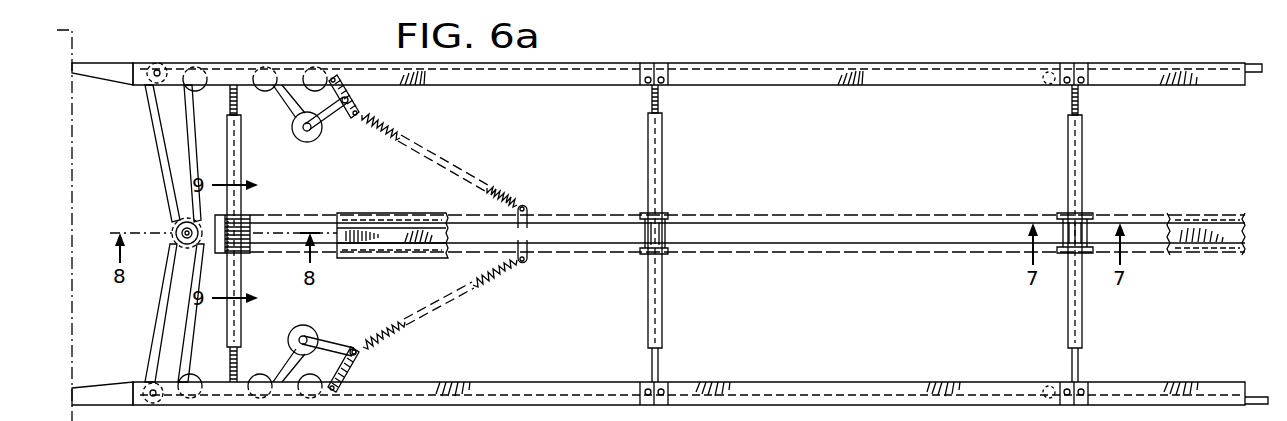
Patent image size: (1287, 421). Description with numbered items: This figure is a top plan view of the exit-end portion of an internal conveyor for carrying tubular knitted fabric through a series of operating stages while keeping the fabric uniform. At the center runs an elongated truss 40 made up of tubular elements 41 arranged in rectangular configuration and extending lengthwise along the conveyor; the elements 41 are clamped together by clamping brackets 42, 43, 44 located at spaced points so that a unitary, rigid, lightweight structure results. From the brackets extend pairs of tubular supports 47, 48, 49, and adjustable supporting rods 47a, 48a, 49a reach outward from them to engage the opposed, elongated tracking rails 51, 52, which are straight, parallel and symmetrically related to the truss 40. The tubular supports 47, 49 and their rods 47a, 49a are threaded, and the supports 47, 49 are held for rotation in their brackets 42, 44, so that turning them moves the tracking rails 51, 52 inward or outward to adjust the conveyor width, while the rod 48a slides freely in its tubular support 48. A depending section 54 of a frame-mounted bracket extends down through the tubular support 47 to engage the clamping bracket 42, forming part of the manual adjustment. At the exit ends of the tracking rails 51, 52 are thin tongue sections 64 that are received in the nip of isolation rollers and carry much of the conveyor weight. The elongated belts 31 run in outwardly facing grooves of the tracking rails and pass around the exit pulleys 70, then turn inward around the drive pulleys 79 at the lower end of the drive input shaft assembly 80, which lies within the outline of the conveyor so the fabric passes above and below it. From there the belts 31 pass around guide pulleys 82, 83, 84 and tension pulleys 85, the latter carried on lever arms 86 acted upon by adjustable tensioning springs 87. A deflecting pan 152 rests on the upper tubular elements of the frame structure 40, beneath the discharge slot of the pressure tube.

The elongated belts 31 is at (152, 139).
The central elongated truss 40 is at (735, 229).
The tubular elements 41 is at (835, 245).
The clamping bracket 42 is at (247, 215).
The clamping bracket 43 is at (668, 213).
The clamping bracket 44 is at (1088, 213).
The tubular support 47 is at (238, 160).
The adjustable supporting rod 47a is at (238, 104).
The tubular support 48 is at (660, 146).
The adjustable supporting rod 48a is at (660, 104).
The tubular support 49 is at (1080, 146).
The adjustable supporting rod 49a is at (1080, 104).
The tracking rail 51 is at (912, 78).
The tracking rail 52 is at (838, 392).
The depending section 54 is at (252, 252).
The tongue section 64 is at (105, 420).
The pulley 70 is at (167, 62).
The drive pulleys 79 is at (177, 225).
The drive input shaft assembly 80 is at (180, 238).
The guide pulley 82 is at (195, 72).
The guide pulley 83 is at (272, 70).
The guide pulley 84 is at (324, 70).
The tension pulley 85 is at (313, 135).
The lever arm 86 is at (360, 105).
The tensioning spring 87 is at (398, 138).
The deflecting pan 152 is at (383, 222).